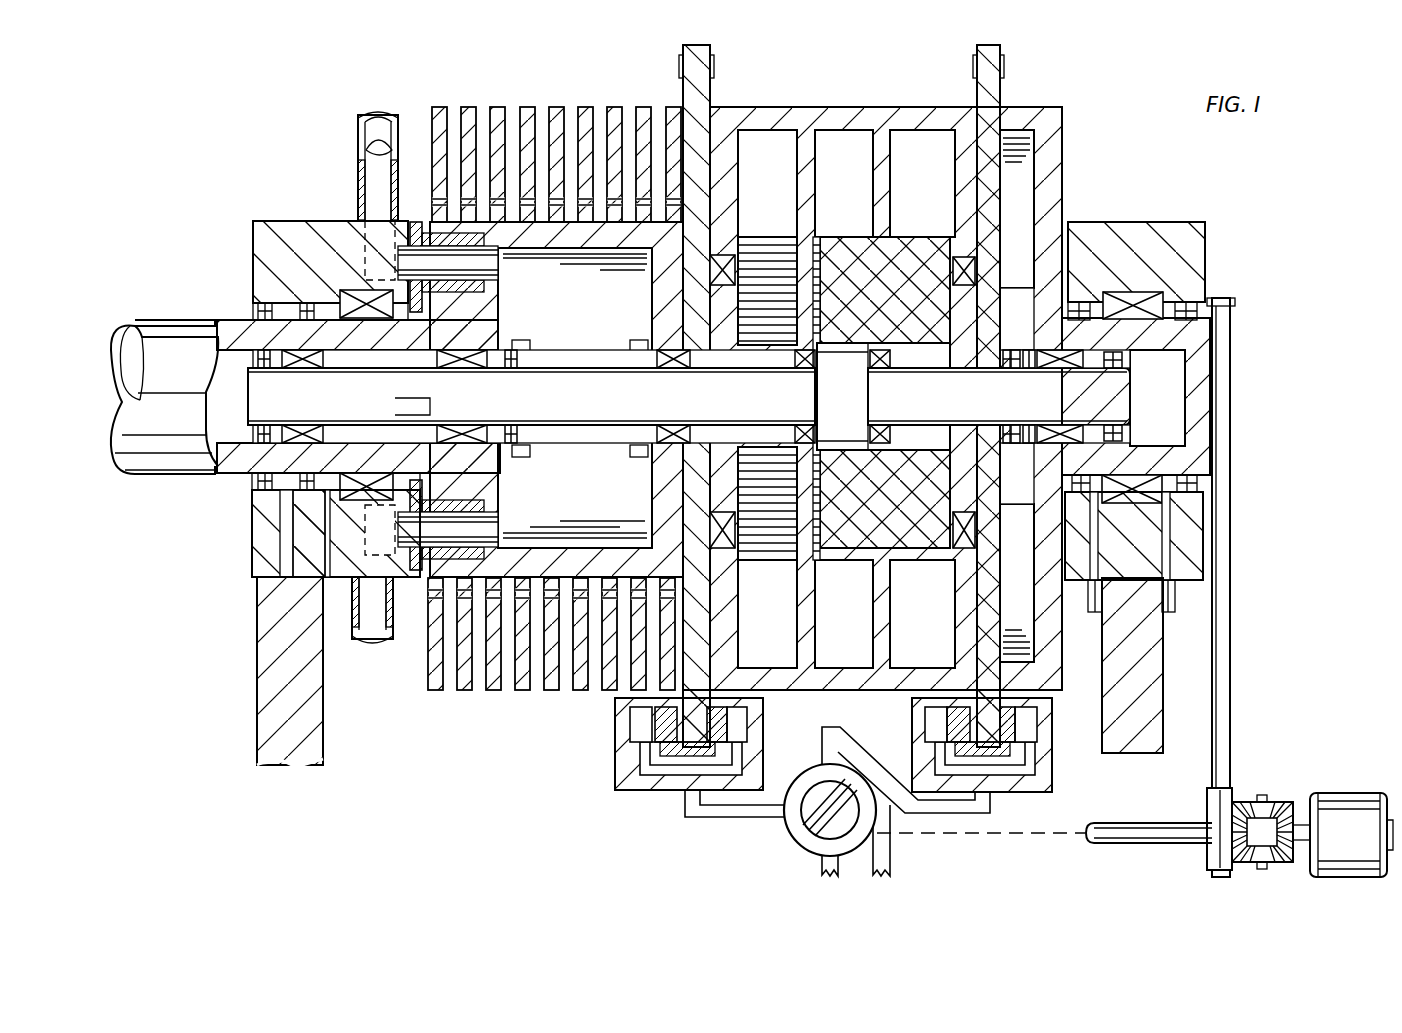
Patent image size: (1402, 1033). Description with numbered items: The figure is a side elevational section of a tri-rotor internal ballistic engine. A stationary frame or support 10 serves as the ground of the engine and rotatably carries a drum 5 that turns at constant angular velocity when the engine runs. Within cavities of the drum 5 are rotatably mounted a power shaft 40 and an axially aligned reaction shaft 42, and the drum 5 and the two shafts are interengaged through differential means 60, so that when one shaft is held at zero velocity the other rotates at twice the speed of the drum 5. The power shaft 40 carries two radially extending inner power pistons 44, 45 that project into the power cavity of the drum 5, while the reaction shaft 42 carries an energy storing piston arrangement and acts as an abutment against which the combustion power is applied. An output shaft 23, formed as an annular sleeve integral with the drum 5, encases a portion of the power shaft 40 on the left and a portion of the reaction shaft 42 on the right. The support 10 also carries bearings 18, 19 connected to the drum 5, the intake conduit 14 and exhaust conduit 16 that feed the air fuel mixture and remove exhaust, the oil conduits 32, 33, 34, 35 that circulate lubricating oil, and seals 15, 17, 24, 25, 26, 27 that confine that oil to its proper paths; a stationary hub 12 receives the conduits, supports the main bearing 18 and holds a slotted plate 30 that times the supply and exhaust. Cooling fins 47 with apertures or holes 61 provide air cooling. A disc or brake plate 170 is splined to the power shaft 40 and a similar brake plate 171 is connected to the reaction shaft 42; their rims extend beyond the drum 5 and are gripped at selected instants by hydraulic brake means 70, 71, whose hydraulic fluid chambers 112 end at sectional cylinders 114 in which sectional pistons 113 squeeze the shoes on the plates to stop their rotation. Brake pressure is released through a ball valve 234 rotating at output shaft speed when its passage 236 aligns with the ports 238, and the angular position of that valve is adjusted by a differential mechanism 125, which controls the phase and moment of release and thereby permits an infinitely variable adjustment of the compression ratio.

The drum 5 is at (591, 70).
The stationary frame 10 is at (270, 645).
The stationary hub 12 is at (264, 232).
The intake conduit 14 is at (358, 160).
The seal 15 is at (1048, 318).
The exhaust conduit 16 is at (394, 640).
The seal 17 is at (1018, 392).
The main bearing 18 is at (350, 490).
The bearing 19 is at (1165, 506).
The output shaft 23 is at (164, 333).
The seal 24 is at (255, 481).
The seal 25 is at (1190, 472).
The seal 26 is at (300, 494).
The seal 27 is at (1096, 511).
The slotted plate 30 is at (414, 220).
The oil conduit 32 is at (332, 553).
The oil conduit 33 is at (1186, 602).
The oil conduit 34 is at (302, 590).
The oil conduit 35 is at (1110, 601).
The power shaft 40 is at (440, 386).
The reaction shaft 42 is at (1096, 397).
The inner power piston 44 is at (586, 309).
The inner power piston 45 is at (586, 523).
The cooling fins 47 is at (583, 114).
The differential means 60 is at (842, 170).
The apertures 61 is at (484, 605).
The hydraulic brake means 70 is at (789, 763).
The hydraulic brake means 71 is at (1036, 810).
The hydraulic fluid chamber 112 is at (640, 758).
The sectional piston 113 is at (724, 727).
The sectional cylinder 114 is at (638, 722).
The differential mechanism 125 is at (1275, 794).
The disc plate 170 is at (690, 620).
The brake plate 171 is at (985, 600).
The ball valve 234 is at (790, 836).
The passage 236 is at (822, 796).
The ports 238 is at (704, 817).